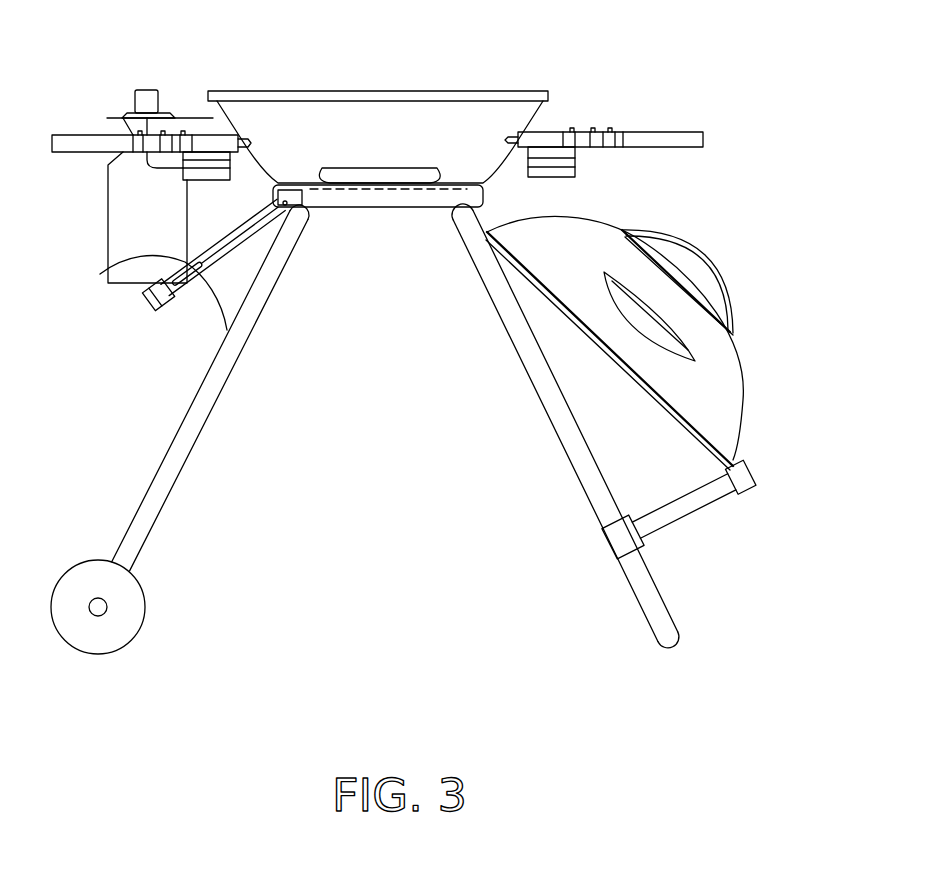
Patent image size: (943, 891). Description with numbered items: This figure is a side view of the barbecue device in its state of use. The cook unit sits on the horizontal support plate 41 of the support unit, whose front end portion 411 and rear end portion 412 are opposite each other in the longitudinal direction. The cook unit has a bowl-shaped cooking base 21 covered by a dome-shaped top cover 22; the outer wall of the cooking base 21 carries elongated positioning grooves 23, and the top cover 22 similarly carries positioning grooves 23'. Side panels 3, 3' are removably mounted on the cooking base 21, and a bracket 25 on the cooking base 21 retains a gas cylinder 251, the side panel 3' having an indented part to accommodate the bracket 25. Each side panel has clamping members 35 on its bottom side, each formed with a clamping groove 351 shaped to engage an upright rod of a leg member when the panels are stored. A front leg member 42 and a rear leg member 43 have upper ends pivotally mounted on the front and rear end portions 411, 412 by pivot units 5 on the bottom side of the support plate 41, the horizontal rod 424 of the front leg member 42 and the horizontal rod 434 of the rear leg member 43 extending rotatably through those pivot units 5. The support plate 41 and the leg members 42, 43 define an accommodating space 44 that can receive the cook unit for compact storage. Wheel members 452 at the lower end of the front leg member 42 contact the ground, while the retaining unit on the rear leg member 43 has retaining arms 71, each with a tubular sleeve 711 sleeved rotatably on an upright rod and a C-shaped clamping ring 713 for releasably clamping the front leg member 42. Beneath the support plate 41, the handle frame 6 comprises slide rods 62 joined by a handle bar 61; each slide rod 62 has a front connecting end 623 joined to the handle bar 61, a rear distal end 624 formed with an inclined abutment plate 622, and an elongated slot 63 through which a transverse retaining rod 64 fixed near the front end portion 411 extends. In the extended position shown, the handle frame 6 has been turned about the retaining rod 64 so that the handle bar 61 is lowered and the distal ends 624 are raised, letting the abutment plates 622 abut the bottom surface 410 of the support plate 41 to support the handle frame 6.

The cooking base 21 is at (538, 115).
The positioning grooves 23 is at (379, 109).
The bottom surface 410 is at (347, 197).
The support plate 41 is at (397, 202).
The rear end portion 412 is at (455, 198).
The side panel 3' is at (151, 98).
The bracket 25 is at (177, 120).
The front end portion 411 is at (272, 184).
The gas cylinder 251 is at (122, 227).
The elongated slot 63 is at (115, 272).
The slide rods 62 is at (195, 280).
The front connecting end 623 is at (172, 300).
The handle bar 61 is at (137, 302).
The handle frame 6 is at (141, 327).
The abutment plate 622 is at (306, 200).
The rear distal end 624 is at (317, 203).
The pivot units 5 is at (303, 223).
The retaining rod 64 is at (272, 222).
The horizontal rod 424 is at (312, 217).
The front leg member 42 is at (170, 445).
The wheel members 452 is at (125, 612).
The accommodating space 44 is at (372, 335).
The rear leg member 43 is at (557, 430).
The top cover 22 is at (712, 388).
The positioning grooves 23' is at (709, 316).
The side panel 3 is at (607, 96).
The clamping members 35 is at (575, 175).
The clamping groove 351 is at (568, 158).
The horizontal rod 434 is at (487, 210).
The retaining arms 71 is at (675, 513).
The tubular sleeve 711 is at (620, 540).
The C-shaped clamping ring 713 is at (755, 475).